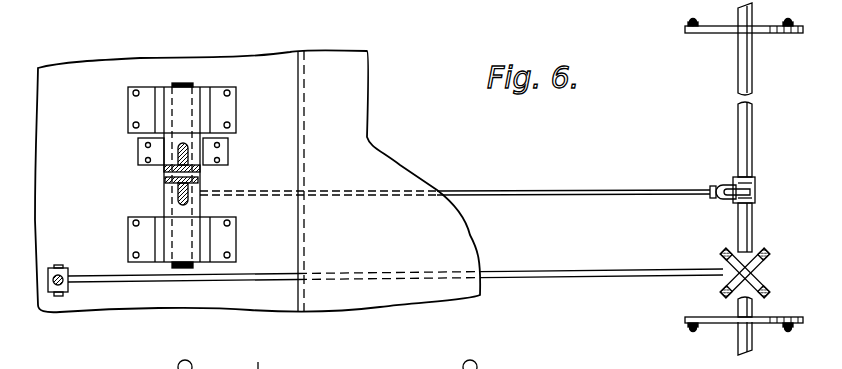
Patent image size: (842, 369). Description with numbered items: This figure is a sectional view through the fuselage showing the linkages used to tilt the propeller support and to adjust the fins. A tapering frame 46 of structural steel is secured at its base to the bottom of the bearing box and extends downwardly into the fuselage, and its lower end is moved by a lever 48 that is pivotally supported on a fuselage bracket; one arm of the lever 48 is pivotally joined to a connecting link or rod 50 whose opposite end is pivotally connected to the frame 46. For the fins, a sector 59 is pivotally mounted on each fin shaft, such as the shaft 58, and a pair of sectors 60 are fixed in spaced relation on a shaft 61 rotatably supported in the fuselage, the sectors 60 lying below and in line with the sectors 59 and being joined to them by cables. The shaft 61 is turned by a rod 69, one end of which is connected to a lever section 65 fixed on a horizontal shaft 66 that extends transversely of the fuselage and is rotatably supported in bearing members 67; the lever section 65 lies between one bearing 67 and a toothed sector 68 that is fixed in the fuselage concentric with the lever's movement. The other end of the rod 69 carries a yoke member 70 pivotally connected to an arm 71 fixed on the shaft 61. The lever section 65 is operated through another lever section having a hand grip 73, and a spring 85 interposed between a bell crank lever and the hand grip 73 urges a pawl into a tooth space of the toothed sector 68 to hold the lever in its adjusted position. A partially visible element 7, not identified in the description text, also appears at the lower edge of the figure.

The tapering frame 46 is at (757, 276).
The lever 48 is at (62, 267).
The connecting link or rod 50 is at (640, 270).
The shaft 58 is at (755, 367).
The sector 59 is at (767, 368).
The sectors 60 is at (715, 33).
The shaft 61 is at (753, 137).
The lever section 65 is at (173, 183).
The horizontal shaft 66 is at (187, 268).
The bearing members 67 is at (130, 118).
The toothed sector 68 is at (177, 152).
The rod 69 is at (570, 195).
The yoke member 70 is at (732, 198).
The arm 71 is at (757, 190).
The hand grip 73 is at (505, 357).
The spring 85 is at (208, 368).
The member 7 is at (248, 360).